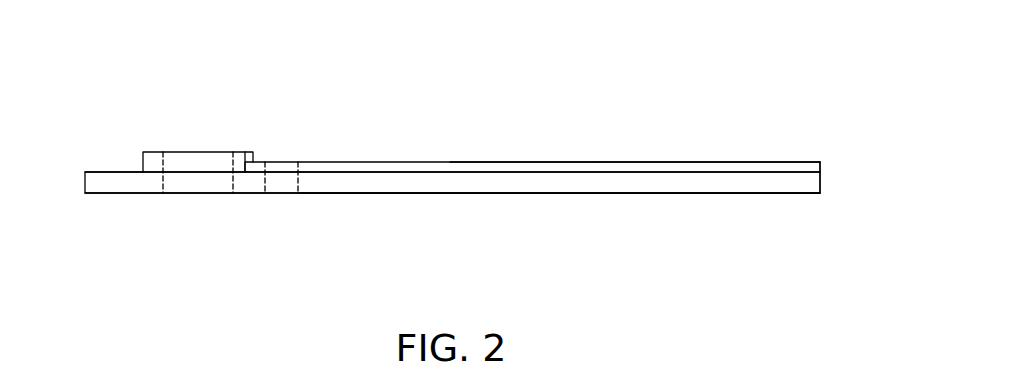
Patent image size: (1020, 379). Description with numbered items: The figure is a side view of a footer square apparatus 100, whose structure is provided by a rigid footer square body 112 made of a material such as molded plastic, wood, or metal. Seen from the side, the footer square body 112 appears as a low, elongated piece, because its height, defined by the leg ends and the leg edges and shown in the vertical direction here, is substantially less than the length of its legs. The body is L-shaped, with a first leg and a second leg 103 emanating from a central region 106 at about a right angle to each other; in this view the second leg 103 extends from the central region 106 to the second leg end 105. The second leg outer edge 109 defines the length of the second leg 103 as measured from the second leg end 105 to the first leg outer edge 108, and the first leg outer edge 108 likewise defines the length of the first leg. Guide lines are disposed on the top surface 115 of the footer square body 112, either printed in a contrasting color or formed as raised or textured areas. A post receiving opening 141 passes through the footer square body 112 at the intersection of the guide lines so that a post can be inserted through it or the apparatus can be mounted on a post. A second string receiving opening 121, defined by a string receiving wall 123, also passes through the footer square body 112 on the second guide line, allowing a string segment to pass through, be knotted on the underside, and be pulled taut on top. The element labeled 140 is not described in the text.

The footer square apparatus 100 is at (452, 108).
The second leg 103 is at (423, 168).
The second leg end 105 is at (820, 178).
The central region 106 is at (163, 233).
The first leg outer edge 108 is at (85, 183).
The second leg outer edge 109 is at (558, 193).
The footer square body 112 is at (450, 247).
The top surface 115 is at (510, 168).
The second string receiving opening 121 is at (283, 178).
The string receiving wall 123 is at (263, 180).
The component block 140 is at (197, 163).
The post receiving opening 141 is at (163, 164).